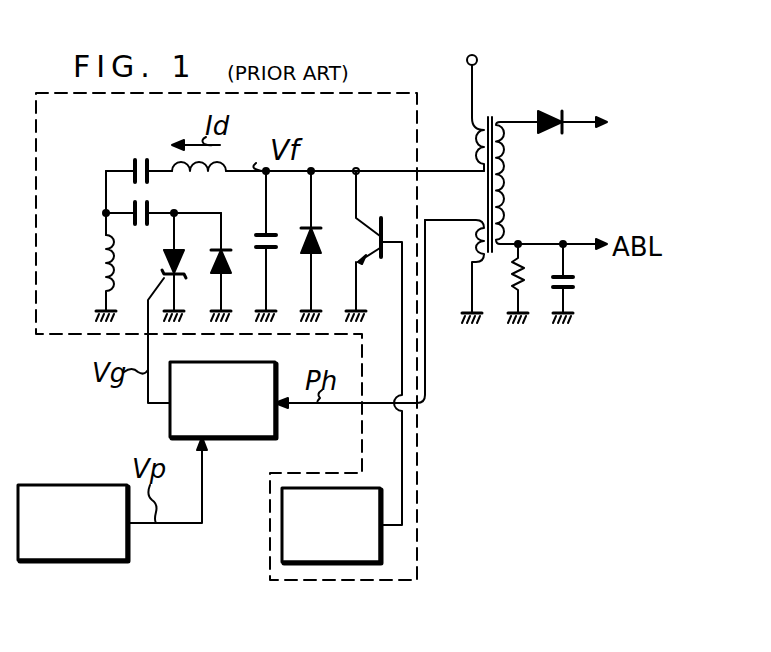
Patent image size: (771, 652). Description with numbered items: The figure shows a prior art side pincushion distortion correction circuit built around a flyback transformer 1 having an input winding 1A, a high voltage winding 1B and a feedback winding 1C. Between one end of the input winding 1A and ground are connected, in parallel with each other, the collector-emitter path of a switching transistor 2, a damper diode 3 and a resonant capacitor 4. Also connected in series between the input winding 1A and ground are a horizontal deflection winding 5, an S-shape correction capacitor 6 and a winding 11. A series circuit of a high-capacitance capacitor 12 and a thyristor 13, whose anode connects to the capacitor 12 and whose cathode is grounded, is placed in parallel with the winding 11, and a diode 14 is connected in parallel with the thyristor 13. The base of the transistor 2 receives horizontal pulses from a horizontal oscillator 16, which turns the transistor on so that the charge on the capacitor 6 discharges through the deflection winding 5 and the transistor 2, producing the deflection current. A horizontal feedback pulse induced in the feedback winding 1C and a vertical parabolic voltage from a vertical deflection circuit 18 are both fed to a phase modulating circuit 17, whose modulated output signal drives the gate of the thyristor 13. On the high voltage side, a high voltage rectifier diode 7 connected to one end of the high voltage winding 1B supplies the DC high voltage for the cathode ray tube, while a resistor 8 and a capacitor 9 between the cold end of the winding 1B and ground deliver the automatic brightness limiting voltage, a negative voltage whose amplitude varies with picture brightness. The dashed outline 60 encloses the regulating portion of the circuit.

The flyback transformer 1 is at (512, 174).
The input winding 1A is at (472, 140).
The high voltage winding 1B is at (522, 200).
The feedback winding 1C is at (462, 236).
The switching transistor 2 is at (386, 258).
The damper diode 3 is at (312, 256).
The resonant capacitor 4 is at (270, 250).
The horizontal deflection winding 5 is at (208, 177).
The S-shape correction capacitor 6 is at (150, 183).
The high voltage rectifier diode 7 is at (545, 134).
The resistor 8 is at (521, 292).
The capacitor 9 is at (574, 282).
The winding 11 is at (103, 272).
The capacitor 12 is at (146, 226).
The thyristor 13 is at (178, 280).
The diode 14 is at (230, 276).
The horizontal oscillator 16 is at (370, 565).
The phase modulating circuit 17 is at (274, 440).
The vertical deflection circuit 18 is at (130, 543).
The regulator circuit 60 is at (356, 94).